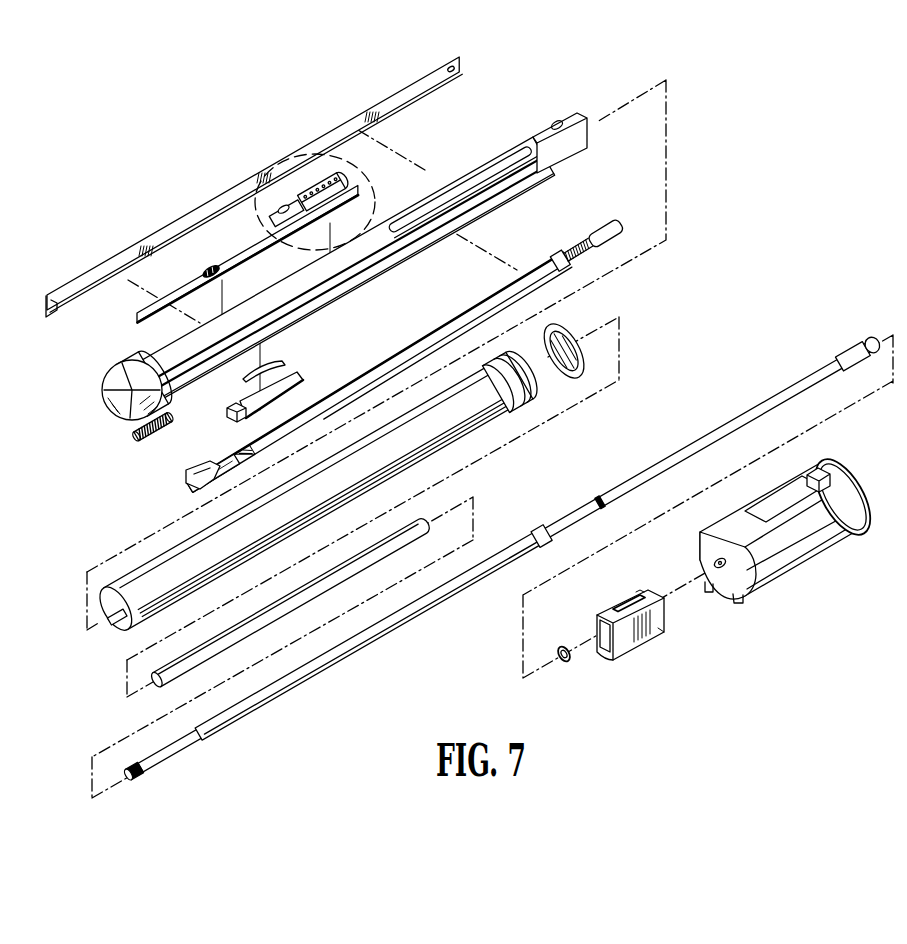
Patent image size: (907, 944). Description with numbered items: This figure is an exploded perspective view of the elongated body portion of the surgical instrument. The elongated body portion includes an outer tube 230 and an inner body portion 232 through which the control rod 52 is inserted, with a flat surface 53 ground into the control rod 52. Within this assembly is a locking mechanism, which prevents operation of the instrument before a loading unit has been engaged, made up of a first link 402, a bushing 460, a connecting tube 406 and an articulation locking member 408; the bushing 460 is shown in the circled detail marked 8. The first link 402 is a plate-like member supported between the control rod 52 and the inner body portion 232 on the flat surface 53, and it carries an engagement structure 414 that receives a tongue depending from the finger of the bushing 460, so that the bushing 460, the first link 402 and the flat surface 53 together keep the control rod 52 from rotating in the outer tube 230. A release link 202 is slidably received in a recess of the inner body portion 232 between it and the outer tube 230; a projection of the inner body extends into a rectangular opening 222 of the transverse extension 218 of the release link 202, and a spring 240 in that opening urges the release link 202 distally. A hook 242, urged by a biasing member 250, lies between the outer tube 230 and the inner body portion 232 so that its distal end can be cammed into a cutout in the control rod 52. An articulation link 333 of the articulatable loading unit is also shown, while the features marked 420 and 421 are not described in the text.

The articulation link 333 is at (378, 100).
The bushing 460 is at (327, 193).
The detail callout 8 is at (376, 185).
The first link 402 is at (176, 296).
The engagement structure 414 is at (212, 270).
The release link 202 is at (549, 266).
The inner body portion 232 is at (120, 365).
The biasing member 250 is at (274, 362).
The hook 242 is at (303, 378).
The rectangular opening 222 is at (218, 462).
The spring 240 is at (160, 426).
The transverse extension 218 is at (198, 466).
The outer tube 230 is at (133, 578).
The connecting tube 406 is at (249, 627).
The flat surface 53 is at (535, 532).
The control rod 52 is at (614, 489).
The window 421 is at (771, 504).
The tab 420 is at (824, 467).
The articulation locking member 408 is at (793, 530).